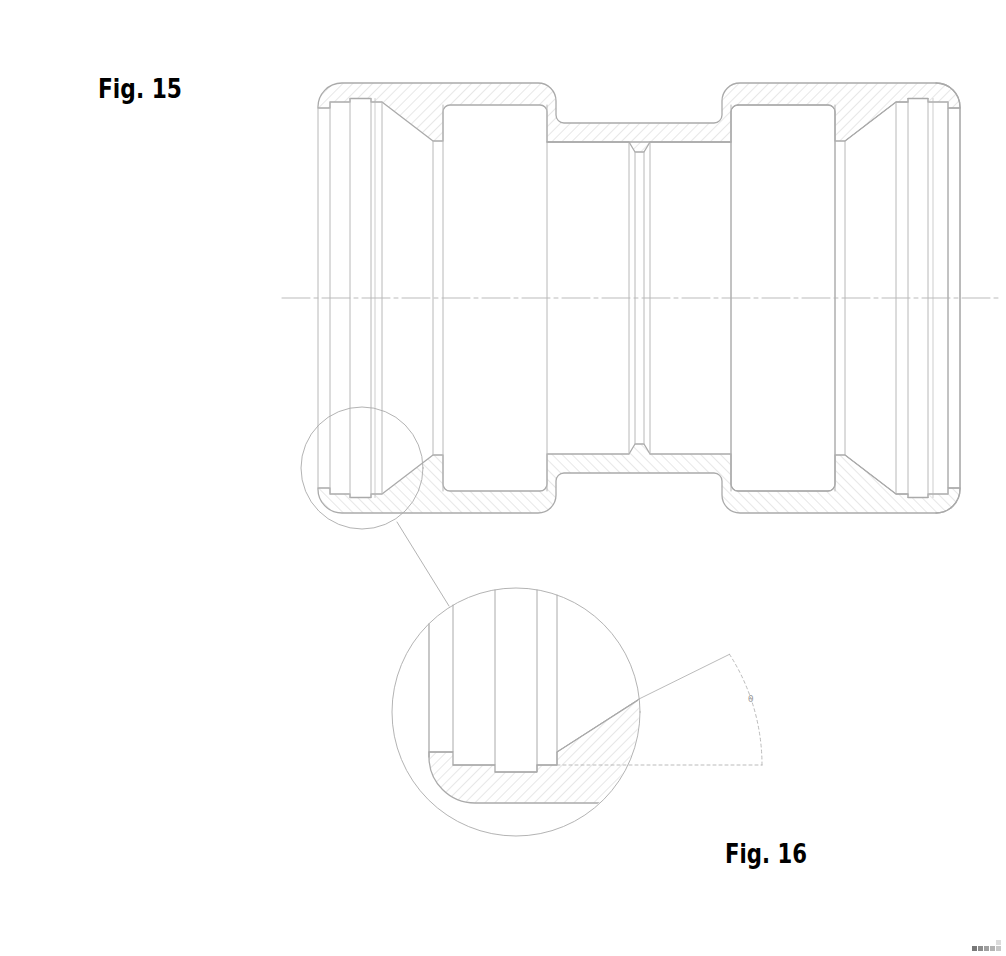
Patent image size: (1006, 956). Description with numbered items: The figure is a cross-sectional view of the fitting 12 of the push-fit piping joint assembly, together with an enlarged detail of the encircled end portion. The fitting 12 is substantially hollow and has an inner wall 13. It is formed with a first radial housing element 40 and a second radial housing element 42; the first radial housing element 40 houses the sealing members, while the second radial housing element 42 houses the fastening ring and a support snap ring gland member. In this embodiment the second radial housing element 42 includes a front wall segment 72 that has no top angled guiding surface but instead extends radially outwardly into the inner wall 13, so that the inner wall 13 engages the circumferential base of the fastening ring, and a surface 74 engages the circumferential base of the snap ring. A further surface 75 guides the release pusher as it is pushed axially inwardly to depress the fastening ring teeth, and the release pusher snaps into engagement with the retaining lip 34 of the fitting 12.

In FIG. 15, the fitting 12 is at (677, 133).
In FIG. 15, the inner wall 13 is at (581, 143).
In FIG. 15, the retaining lip 34 is at (958, 105).
In FIG. 15, the first radial housing element 40 is at (774, 477).
In FIG. 15, the second radial housing element 42 is at (901, 495).
In FIG. 16, the second radial housing element 42 is at (551, 769).
In FIG. 16, the front wall segment 72 is at (490, 773).
In FIG. 15, the surface 74 is at (922, 497).
In FIG. 16, the surface 74 is at (513, 777).
In FIG. 15, the surface 75 is at (935, 100).
In FIG. 16, the surface 75 is at (463, 768).